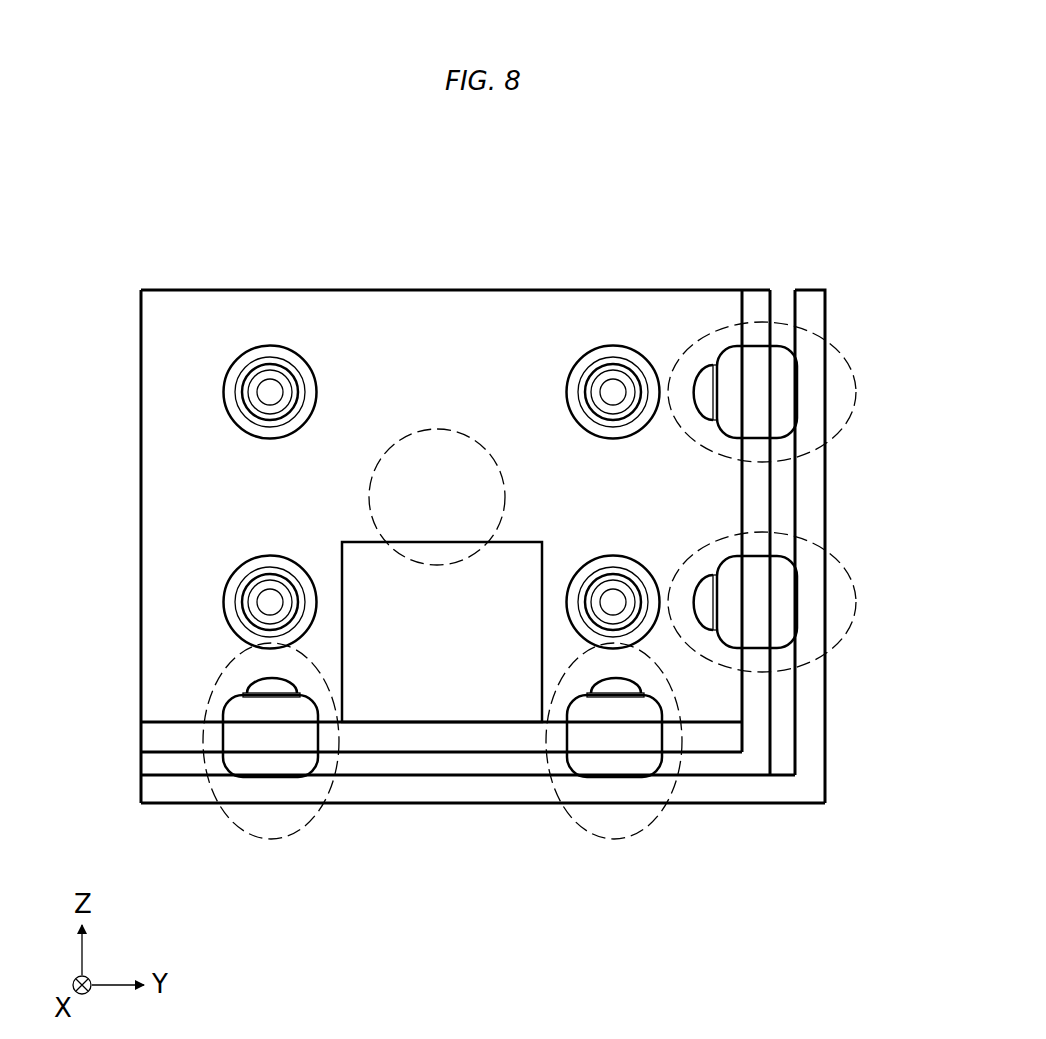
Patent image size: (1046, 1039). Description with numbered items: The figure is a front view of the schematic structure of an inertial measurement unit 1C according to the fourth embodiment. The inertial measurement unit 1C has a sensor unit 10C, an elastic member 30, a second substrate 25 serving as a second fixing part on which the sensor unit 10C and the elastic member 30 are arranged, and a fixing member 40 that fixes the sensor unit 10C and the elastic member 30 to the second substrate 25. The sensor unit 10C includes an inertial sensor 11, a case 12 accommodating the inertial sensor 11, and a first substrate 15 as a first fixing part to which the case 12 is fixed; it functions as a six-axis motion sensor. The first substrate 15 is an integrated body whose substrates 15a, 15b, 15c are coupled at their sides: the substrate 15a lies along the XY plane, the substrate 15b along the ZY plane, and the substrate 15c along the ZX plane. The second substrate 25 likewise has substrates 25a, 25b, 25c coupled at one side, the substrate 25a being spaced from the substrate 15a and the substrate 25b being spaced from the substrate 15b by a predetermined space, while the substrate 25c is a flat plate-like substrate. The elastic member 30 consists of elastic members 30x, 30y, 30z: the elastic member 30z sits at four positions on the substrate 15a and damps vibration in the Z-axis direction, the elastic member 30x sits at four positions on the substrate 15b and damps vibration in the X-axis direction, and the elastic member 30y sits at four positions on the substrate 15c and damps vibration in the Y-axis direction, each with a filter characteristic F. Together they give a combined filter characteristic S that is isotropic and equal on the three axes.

The inertial measurement unit 1C is at (880, 190).
The elastic member 30 is at (273, 226).
The elastic member 30x is at (272, 348).
The fixing member 40 is at (250, 394).
The elastic member 30y is at (785, 390).
The elastic member 30z is at (273, 762).
The combined filter characteristic S is at (437, 432).
The filter characteristic F is at (842, 440).
The substrate 15a is at (148, 735).
The substrate 15b is at (148, 343).
The substrate 15c is at (756, 303).
The first substrate 15 is at (384, 798).
The case 12 is at (440, 688).
The inertial sensor 11 is at (494, 688).
The sensor unit 10C is at (442, 730).
The second substrate 25 is at (528, 610).
The substrate 25a is at (690, 790).
The substrate 25b is at (752, 764).
The substrate 25c is at (812, 322).